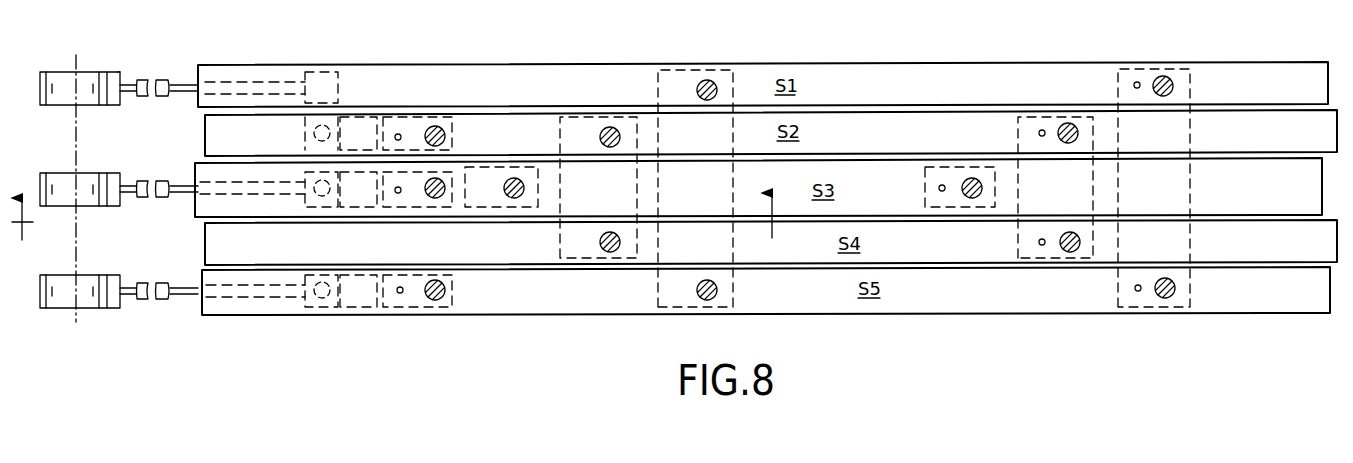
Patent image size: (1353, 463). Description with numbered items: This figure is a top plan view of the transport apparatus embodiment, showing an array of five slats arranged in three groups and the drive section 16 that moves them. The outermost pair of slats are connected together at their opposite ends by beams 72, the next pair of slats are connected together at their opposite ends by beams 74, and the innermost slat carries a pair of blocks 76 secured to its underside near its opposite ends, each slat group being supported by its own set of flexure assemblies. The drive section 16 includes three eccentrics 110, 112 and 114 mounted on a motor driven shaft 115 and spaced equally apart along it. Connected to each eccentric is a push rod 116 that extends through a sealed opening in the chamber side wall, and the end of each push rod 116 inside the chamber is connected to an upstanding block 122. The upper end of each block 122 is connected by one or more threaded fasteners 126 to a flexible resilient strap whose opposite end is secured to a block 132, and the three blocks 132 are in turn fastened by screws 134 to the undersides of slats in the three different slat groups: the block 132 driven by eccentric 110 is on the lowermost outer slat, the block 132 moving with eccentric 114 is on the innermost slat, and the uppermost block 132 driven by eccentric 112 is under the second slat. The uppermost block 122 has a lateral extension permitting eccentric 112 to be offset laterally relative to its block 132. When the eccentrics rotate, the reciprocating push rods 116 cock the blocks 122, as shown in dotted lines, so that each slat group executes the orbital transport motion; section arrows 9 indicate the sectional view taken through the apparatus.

The drive section 16 is at (113, 62).
The section line arrow 9 is at (395, 232).
The beams 72 is at (657, 78).
The beams 74 is at (559, 126).
The blocks 76 is at (516, 165).
The eccentric 110 is at (90, 306).
The eccentric 112 is at (93, 106).
The eccentric 114 is at (88, 203).
The motor driven shaft 115 is at (80, 140).
The push rod 116 is at (184, 95).
The upstanding block 122 is at (341, 76).
The threaded fasteners 126 is at (314, 133).
The block 132 is at (405, 114).
The screws 134 is at (438, 127).